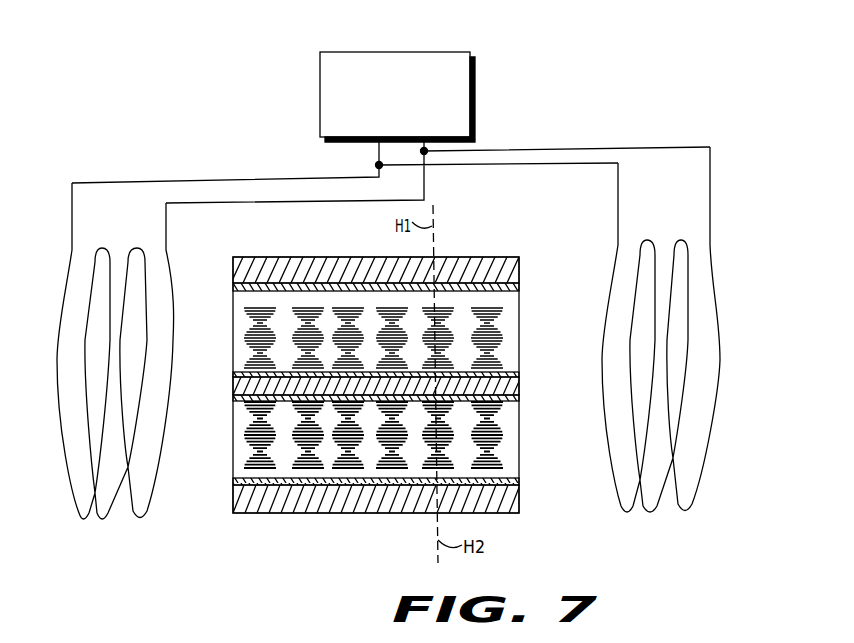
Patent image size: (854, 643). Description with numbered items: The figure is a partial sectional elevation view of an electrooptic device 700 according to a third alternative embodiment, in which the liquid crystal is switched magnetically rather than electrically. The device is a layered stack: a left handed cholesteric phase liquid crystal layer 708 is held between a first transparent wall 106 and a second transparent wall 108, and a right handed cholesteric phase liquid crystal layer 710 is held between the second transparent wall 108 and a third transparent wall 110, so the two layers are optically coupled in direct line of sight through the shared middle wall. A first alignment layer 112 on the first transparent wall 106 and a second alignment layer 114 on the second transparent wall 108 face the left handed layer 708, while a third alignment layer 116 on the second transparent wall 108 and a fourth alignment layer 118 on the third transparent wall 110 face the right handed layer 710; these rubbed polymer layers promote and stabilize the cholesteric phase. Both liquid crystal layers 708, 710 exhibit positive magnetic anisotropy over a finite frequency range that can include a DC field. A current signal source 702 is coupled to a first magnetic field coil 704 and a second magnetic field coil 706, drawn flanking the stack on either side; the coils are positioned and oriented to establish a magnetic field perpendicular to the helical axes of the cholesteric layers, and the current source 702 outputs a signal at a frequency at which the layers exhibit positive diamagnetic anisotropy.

The electrooptic device 700 is at (356, 546).
The current signal source 702 is at (462, 50).
The first magnetic field coil 704 is at (148, 512).
The second magnetic field coil 706 is at (620, 505).
The first transparent wall 106 is at (519, 257).
The first alignment layer 112 is at (512, 296).
The left handed cholesteric phase liquid crystal layer 708 is at (512, 333).
The second alignment layer 114 is at (519, 372).
The second transparent wall 108 is at (519, 383).
The third alignment layer 116 is at (519, 397).
The right handed cholesteric phase liquid crystal layer 710 is at (513, 430).
The fourth alignment layer 118 is at (519, 478).
The third transparent wall 110 is at (519, 490).